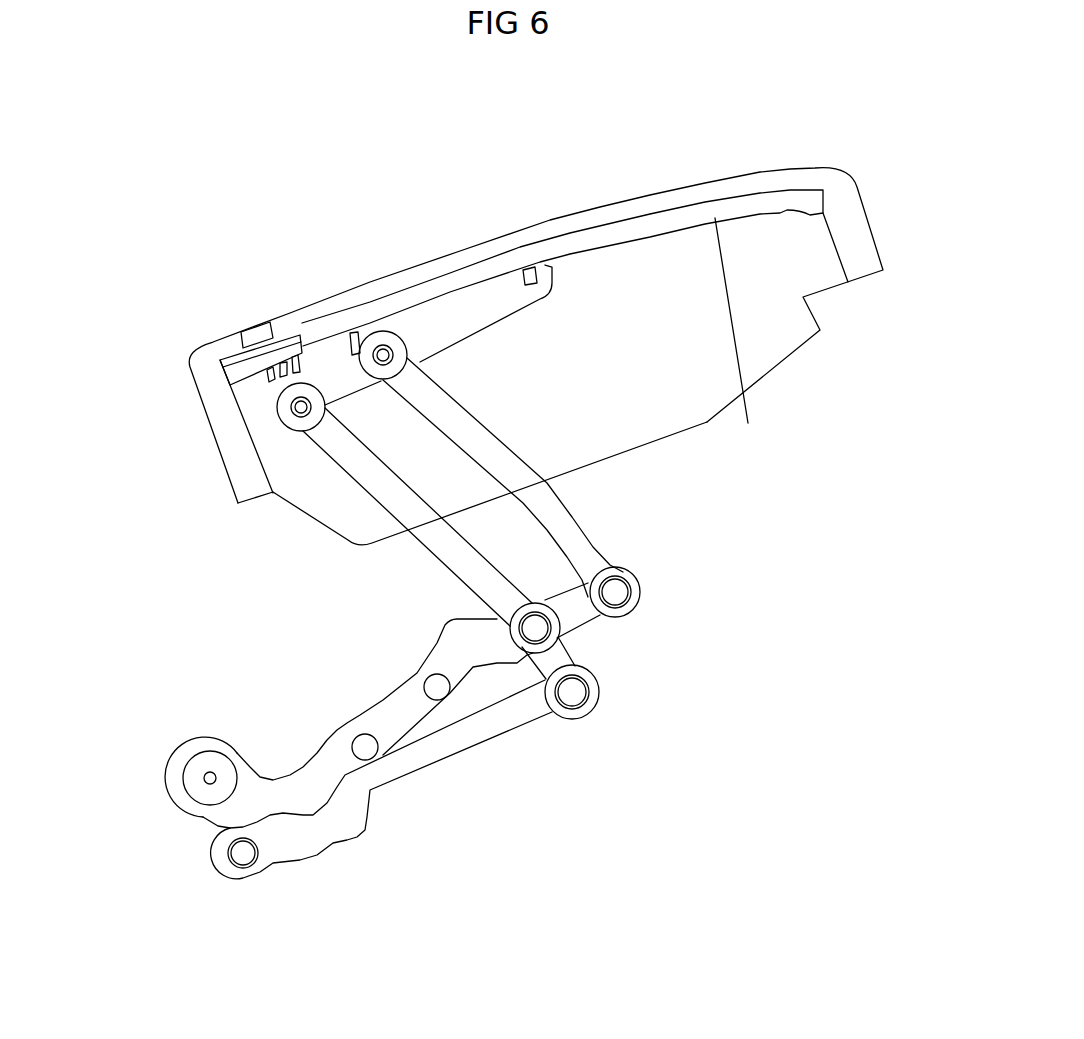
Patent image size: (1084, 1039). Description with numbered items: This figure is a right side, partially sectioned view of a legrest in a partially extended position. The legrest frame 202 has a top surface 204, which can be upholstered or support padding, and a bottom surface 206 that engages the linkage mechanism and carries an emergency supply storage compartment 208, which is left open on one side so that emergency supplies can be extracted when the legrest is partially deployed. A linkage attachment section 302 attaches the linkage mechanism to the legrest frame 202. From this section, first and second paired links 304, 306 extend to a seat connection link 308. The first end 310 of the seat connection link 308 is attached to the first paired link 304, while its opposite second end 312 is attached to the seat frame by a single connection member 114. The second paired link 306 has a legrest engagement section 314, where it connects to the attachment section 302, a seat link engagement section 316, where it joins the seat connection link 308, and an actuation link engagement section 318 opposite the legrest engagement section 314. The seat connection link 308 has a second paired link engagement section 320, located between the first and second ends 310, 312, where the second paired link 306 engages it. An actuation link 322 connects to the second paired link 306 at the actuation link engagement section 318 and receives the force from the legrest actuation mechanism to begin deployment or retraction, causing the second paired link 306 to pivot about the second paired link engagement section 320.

The connection member 114 is at (207, 782).
The legrest frame 202 is at (835, 285).
The top surface 204 is at (697, 188).
The bottom surface 206 is at (742, 335).
The emergency supply storage compartment 208 is at (347, 545).
The linkage attachment section 302 is at (337, 373).
The first paired link 304 is at (578, 530).
The second paired link 306 is at (463, 558).
The seat connection link 308 is at (288, 782).
The first end 310 is at (622, 593).
The second end 312 is at (135, 778).
The legrest engagement section 314 is at (262, 427).
The seat link engagement section 316 is at (560, 635).
The actuation link engagement section 318 is at (557, 713).
The second paired link engagement section 320 is at (537, 576).
The actuation link 322 is at (425, 753).